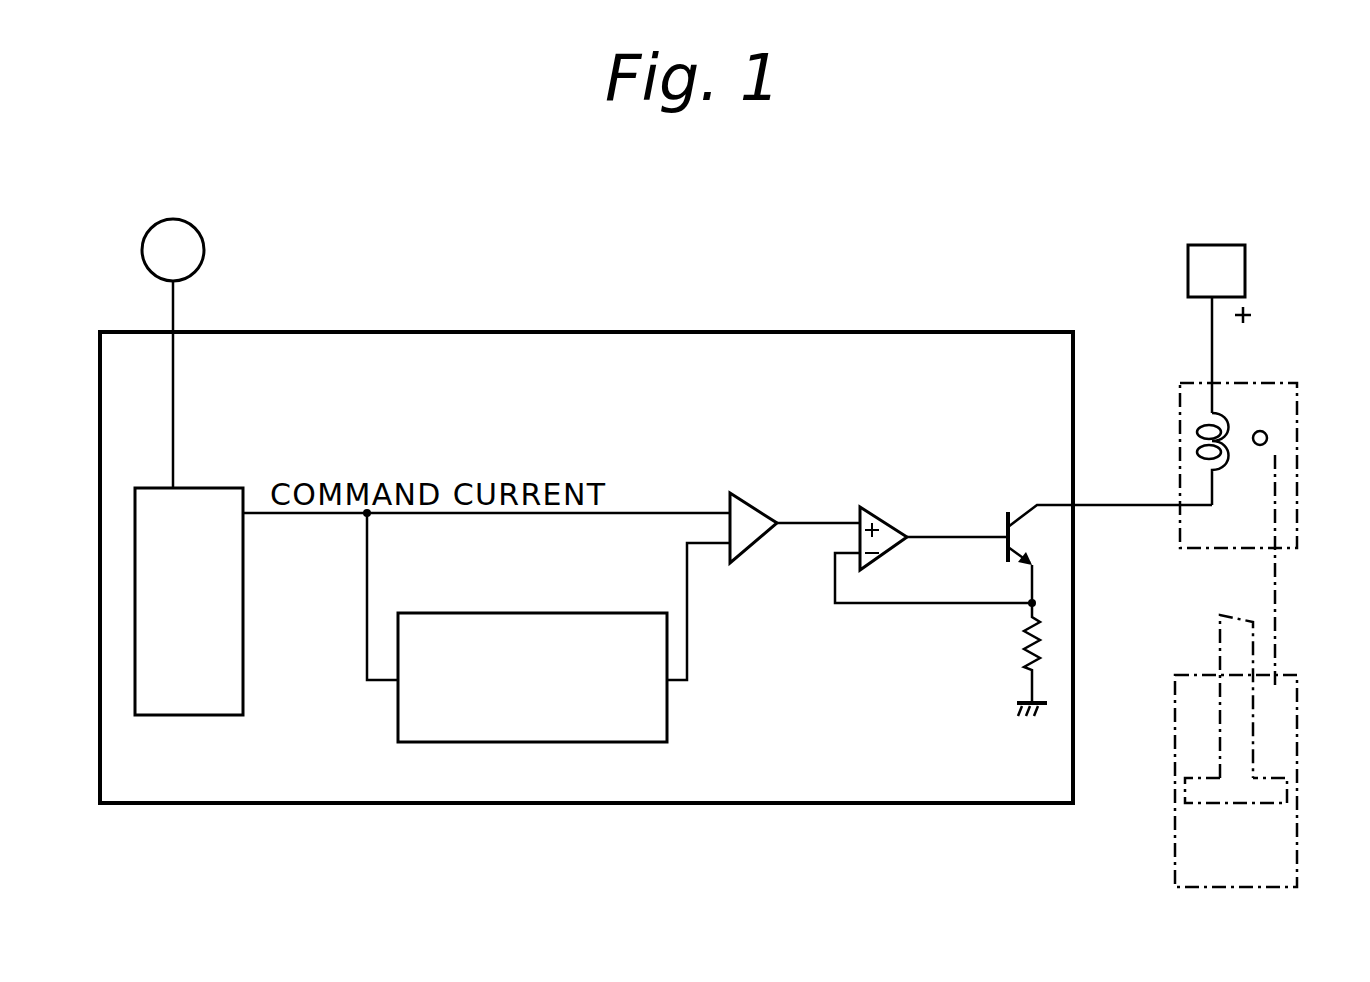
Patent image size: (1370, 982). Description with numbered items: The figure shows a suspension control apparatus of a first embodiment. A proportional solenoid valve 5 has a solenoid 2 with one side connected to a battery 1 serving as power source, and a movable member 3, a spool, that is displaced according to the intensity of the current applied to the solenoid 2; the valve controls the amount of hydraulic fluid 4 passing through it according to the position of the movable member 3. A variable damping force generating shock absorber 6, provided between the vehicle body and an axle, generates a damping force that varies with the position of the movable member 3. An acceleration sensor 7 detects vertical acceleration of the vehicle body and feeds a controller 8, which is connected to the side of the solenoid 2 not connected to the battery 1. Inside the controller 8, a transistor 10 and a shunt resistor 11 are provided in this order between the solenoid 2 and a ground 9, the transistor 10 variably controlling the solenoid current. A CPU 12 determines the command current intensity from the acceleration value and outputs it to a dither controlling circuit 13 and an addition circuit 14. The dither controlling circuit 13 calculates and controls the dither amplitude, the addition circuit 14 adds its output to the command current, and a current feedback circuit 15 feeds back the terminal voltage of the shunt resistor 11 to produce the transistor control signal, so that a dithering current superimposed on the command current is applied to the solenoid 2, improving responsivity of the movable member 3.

The battery 1 is at (1245, 272).
The solenoid 2 is at (1200, 437).
The movable member 3 is at (1268, 438).
The hydraulic fluid 4 is at (1278, 590).
The proportional solenoid valve 5 is at (1297, 400).
The variable damping force generating shock absorber 6 is at (1297, 762).
The acceleration sensor 7 is at (205, 247).
The controller 8 is at (805, 805).
The ground 9 is at (1047, 712).
The transistor 10 is at (1015, 512).
The shunt resistor 11 is at (1012, 645).
The CPU 12 is at (204, 716).
The dither controlling circuit 13 is at (490, 743).
The addition circuit 14 is at (733, 493).
The current feedback circuit 15 is at (873, 507).